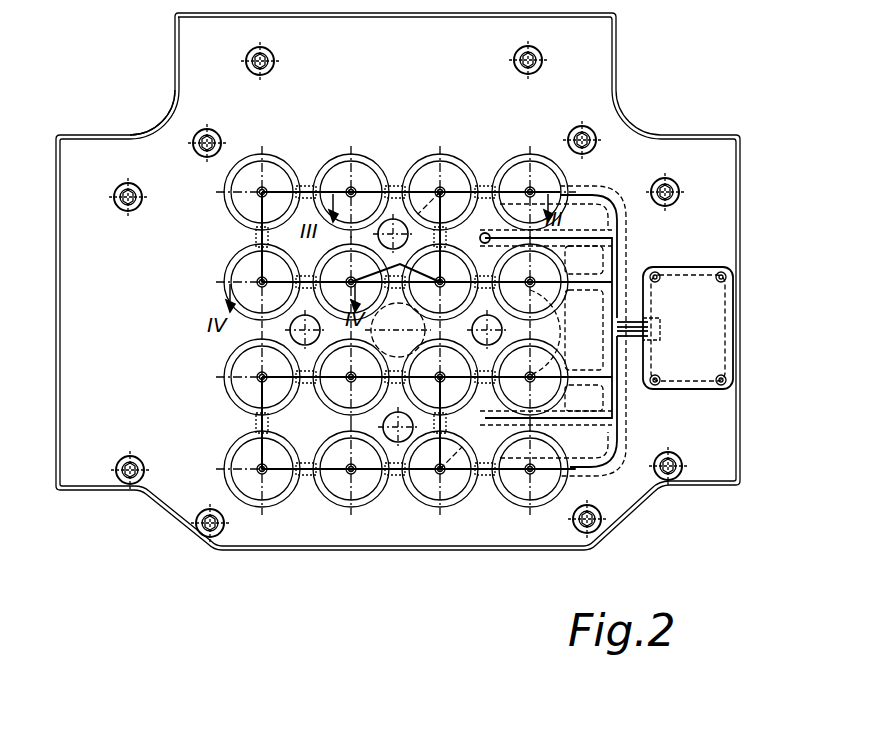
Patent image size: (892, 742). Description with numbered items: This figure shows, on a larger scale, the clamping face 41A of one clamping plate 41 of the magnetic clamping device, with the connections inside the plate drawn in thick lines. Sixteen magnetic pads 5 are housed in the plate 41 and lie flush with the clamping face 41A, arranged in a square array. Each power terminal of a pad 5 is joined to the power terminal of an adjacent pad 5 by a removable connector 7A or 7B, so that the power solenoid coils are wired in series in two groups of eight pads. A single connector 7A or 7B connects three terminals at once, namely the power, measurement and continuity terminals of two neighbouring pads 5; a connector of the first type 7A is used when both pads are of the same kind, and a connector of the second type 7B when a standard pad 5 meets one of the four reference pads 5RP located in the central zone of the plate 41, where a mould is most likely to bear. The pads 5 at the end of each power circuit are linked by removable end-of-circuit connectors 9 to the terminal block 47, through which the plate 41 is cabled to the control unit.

The clamping plate 41 is at (421, 281).
The clamping face 41A is at (212, 50).
The magnetic pad 5 is at (432, 155).
The removable connector of a first type 7A is at (445, 185).
The removable connector of a second type 7B is at (345, 380).
The reference pad 5RP is at (398, 330).
The removable end-of-circuit connector 9 is at (578, 188).
The terminal block 47 is at (688, 328).